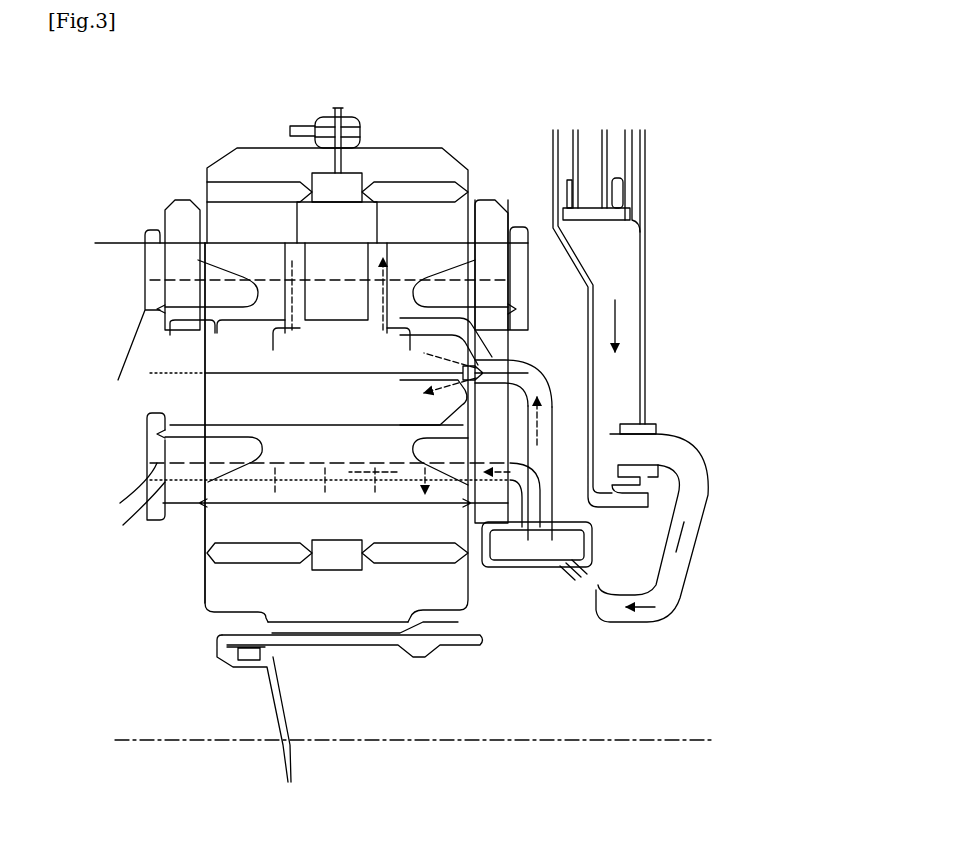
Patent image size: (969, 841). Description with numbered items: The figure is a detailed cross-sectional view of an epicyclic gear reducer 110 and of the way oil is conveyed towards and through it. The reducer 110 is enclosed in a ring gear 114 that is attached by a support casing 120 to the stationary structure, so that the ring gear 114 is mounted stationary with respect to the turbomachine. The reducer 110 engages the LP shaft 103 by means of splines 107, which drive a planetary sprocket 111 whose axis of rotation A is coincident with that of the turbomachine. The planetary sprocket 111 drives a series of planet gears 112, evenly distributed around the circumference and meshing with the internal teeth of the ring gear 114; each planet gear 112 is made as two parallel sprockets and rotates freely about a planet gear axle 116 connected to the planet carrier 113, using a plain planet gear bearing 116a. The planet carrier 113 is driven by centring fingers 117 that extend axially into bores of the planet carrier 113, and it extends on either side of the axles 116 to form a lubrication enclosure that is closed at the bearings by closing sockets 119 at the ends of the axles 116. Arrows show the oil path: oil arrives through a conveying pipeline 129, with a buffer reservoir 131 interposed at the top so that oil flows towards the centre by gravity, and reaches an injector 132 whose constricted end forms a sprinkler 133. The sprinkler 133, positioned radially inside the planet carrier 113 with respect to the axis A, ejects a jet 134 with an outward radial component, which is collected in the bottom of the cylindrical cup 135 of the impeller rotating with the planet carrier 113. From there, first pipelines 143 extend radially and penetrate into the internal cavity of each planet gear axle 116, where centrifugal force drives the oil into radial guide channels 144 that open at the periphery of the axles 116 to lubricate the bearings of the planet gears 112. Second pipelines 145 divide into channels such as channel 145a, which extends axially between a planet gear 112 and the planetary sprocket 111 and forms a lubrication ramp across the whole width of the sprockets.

The reducer 110 is at (176, 116).
The support casing 120 is at (334, 108).
The ring gear 114 is at (442, 172).
The planet gear 112 is at (460, 208).
The planet carrier 113 is at (182, 215).
The conveying pipeline 129 is at (628, 162).
The centring finger 117 is at (240, 235).
The closing socket 119 is at (540, 270).
The buffer reservoir 131 is at (618, 262).
The planet gear axle 116 is at (507, 335).
The first pipeline 143 is at (545, 368).
The second pipeline 145 is at (508, 463).
The guide channel 144 is at (270, 345).
The channel 145a is at (320, 465).
The injector 132 is at (690, 490).
The cylindrical cup 135 is at (597, 550).
The jet 134 is at (578, 568).
The sprinkler 133 is at (605, 605).
The planet gear bearing 116a is at (400, 495).
The planetary sprocket 111 is at (228, 580).
The axis of rotation A is at (130, 740).
The splines 107 is at (325, 645).
The LP shaft 103 is at (430, 646).